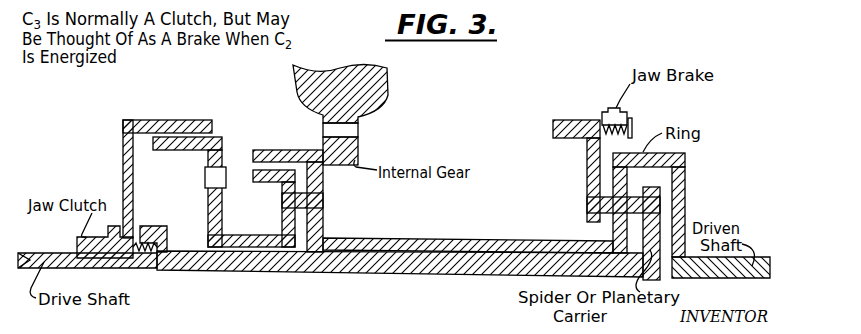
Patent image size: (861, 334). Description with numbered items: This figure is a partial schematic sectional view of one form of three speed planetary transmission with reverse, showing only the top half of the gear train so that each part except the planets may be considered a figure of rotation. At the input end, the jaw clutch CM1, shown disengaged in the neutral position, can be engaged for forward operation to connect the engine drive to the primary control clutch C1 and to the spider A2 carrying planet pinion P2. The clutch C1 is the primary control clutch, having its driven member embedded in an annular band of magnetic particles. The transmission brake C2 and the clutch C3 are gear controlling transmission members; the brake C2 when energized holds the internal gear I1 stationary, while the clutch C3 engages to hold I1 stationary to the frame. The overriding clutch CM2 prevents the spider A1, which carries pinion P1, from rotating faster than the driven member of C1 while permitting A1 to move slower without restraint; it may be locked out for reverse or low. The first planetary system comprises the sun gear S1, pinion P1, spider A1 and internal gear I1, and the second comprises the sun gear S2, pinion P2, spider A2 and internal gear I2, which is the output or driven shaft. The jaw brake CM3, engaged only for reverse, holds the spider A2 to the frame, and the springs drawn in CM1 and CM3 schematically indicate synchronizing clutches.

The primary control clutch C1 is at (192, 125).
The transmission brake C2 is at (348, 132).
The clutch C3 is at (258, 174).
The jaw clutch CM1 is at (77, 247).
The overriding clutch CM2 is at (210, 178).
The jaw brake CM3 is at (602, 116).
The spider A1 is at (277, 235).
The spider A2 is at (587, 164).
The internal gear I1 is at (328, 168).
The internal gear I2 is at (649, 205).
The planet pinion P1 is at (318, 209).
The planet pinion P2 is at (587, 206).
The sun gear S1 is at (323, 231).
The sun gear S2 is at (613, 229).